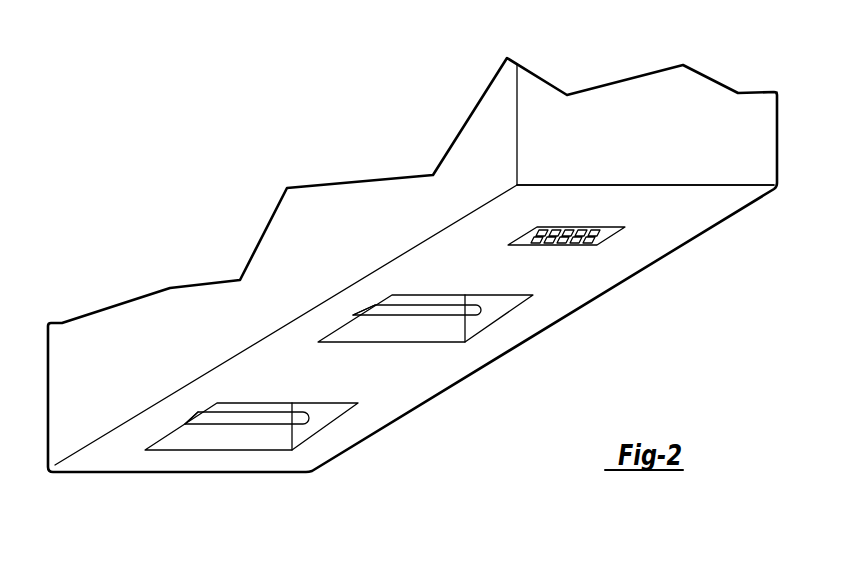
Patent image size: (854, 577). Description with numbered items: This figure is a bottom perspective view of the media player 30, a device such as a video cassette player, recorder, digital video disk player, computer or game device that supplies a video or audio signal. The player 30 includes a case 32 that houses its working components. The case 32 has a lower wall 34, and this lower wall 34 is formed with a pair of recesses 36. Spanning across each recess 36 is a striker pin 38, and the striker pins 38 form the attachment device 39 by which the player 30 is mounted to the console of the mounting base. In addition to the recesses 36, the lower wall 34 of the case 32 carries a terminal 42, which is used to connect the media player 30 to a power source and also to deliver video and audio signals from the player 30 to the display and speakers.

The media player 30 is at (425, 403).
The case 32 is at (738, 137).
The lower wall 34 is at (697, 207).
The recess 36 is at (499, 306).
The striker pin 38 is at (425, 310).
The attachment device 39 is at (347, 312).
The terminal 42 is at (608, 237).